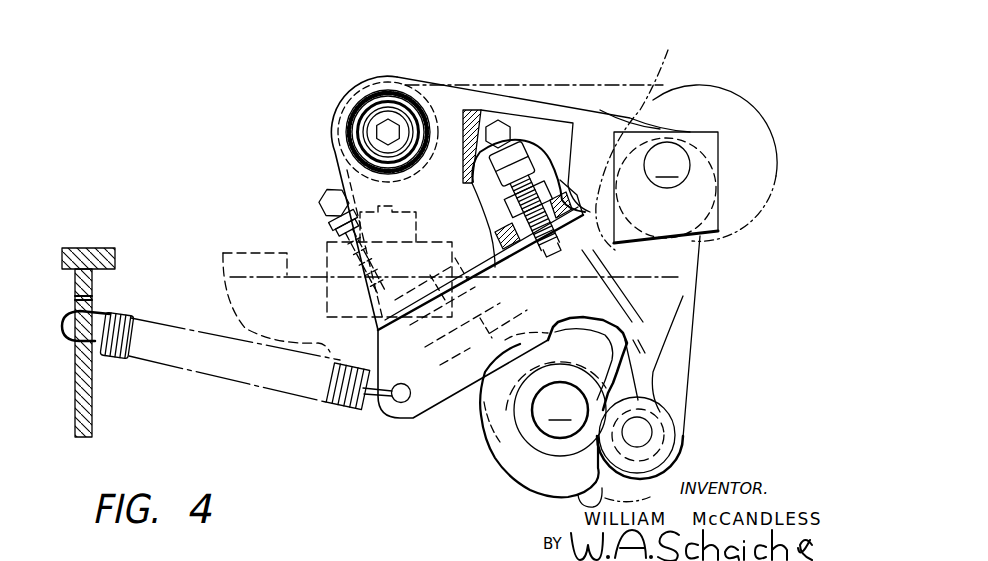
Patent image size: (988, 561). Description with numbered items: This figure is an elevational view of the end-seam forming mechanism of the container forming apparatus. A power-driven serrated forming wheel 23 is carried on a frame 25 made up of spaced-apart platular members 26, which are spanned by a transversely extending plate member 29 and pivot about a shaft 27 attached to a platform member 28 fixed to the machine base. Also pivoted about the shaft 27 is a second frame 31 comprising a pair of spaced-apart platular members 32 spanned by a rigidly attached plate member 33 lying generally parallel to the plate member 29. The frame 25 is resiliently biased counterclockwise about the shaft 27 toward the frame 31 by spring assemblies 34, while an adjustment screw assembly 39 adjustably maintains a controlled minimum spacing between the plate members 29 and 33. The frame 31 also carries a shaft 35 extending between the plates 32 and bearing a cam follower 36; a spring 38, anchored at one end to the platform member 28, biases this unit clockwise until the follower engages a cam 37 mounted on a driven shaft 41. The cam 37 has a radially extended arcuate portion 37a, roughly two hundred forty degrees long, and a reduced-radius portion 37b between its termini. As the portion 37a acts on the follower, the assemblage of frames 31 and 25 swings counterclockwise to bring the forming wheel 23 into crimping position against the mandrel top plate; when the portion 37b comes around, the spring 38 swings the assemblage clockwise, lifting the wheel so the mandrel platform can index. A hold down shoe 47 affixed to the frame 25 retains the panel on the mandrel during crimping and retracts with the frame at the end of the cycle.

The forming wheel 23 is at (395, 95).
The frame 25 is at (593, 106).
The platular members 26 is at (613, 115).
The shaft 27 is at (666, 187).
The platform member 28 is at (116, 293).
The plate member 29 is at (566, 183).
The second frame 31 is at (700, 352).
The platular members 32 is at (693, 306).
The plate member 33 is at (480, 268).
The spring assemblies 34 is at (324, 199).
The shaft 35 is at (640, 432).
The cam follower 36 is at (672, 408).
The cam 37 is at (528, 492).
The radially extended portion 37a is at (490, 448).
The portion of reduced radius 37b is at (585, 500).
The spring 38 is at (115, 358).
The adjustment screw assembly 39 is at (518, 152).
The shaft 41 is at (556, 409).
The hold down shoe 47 is at (479, 183).